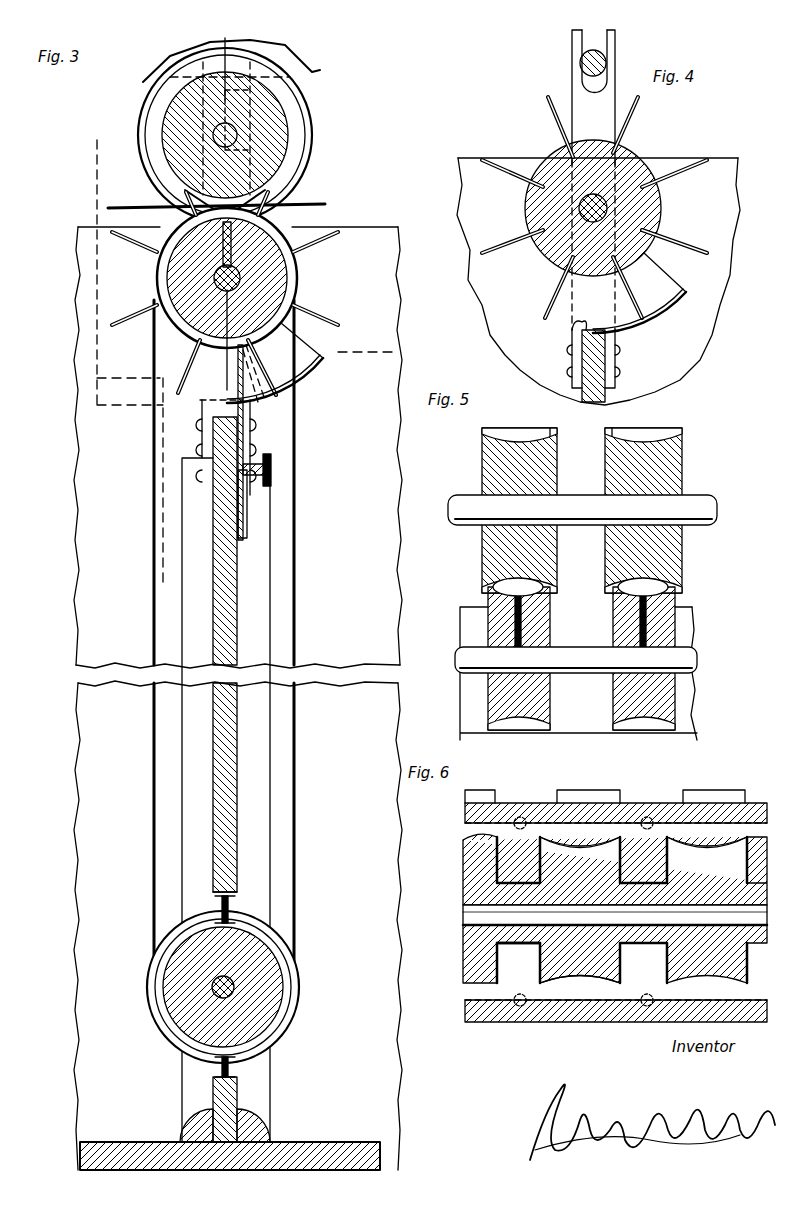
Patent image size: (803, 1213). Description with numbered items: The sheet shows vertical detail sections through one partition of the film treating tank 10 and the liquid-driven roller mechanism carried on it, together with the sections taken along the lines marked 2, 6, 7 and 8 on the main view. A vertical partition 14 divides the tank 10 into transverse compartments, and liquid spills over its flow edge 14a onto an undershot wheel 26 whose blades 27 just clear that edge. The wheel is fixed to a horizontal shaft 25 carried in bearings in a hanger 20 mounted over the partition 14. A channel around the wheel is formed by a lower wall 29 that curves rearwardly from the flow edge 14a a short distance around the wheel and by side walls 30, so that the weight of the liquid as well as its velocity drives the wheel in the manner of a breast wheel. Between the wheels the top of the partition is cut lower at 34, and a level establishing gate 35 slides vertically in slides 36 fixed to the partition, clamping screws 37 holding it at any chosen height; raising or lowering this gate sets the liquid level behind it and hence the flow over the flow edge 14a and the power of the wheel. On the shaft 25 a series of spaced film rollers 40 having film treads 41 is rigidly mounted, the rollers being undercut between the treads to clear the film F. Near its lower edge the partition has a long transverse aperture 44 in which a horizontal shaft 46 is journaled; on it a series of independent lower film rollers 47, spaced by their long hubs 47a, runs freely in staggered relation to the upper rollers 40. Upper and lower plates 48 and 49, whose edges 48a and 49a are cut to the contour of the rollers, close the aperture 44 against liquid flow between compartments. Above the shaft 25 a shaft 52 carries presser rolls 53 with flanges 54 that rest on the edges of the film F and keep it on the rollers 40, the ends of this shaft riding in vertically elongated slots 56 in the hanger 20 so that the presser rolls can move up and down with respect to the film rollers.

In FIG. 3, the tank 10 is at (356, 245).
In FIG. 4, the tank 10 is at (718, 232).
In FIG. 3, the vertical partition 14 is at (232, 786).
In FIG. 4, the vertical partition 14 is at (600, 370).
In FIG. 3, the flow edge 14a is at (200, 401).
In FIG. 4, the flow edge 14a is at (572, 325).
In FIG. 4, the hanger 20 is at (575, 96).
In FIG. 3, the horizontal shaft 25 is at (241, 278).
In FIG. 4, the horizontal shaft 25 is at (605, 188).
In FIG. 3, the undershot wheel 26 is at (338, 232).
In FIG. 4, the undershot wheel 26 is at (523, 205).
In FIG. 3, the blade 27 is at (138, 305).
In FIG. 4, the blade 27 is at (552, 115).
In FIG. 3, the lower wall 29 is at (275, 400).
In FIG. 4, the lower wall 29 is at (665, 312).
In FIG. 3, the side wall 30 is at (283, 362).
In FIG. 4, the side wall 30 is at (664, 275).
In FIG. 3, the lowered upper edge 34 is at (256, 426).
In FIG. 3, the level establishing gate 35 is at (244, 418).
In FIG. 3, the slide 36 is at (246, 505).
In FIG. 3, the clamping screw 37 is at (272, 470).
In FIG. 3, the film roller 40 is at (192, 336).
In FIG. 5, the film roller 40 is at (548, 636).
In FIG. 5, the film tread 41 is at (605, 582).
In FIG. 3, the transverse aperture 44 is at (218, 897).
In FIG. 6, the transverse aperture 44 is at (582, 830).
In FIG. 3, the horizontal shaft 46 is at (234, 990).
In FIG. 6, the horizontal shaft 46 is at (467, 913).
In FIG. 6, the lower film roller 47 is at (472, 870).
In FIG. 6, the hub 47a is at (526, 945).
In FIG. 3, the upper plate 48 is at (232, 900).
In FIG. 6, the upper plate 48 is at (472, 833).
In FIG. 6, the edge of upper plate 48a is at (575, 845).
In FIG. 3, the lower plate 49 is at (232, 1068).
In FIG. 6, the lower plate 49 is at (472, 995).
In FIG. 6, the edge of lower plate 49a is at (585, 985).
In FIG. 3, the shaft 52 is at (237, 138).
In FIG. 4, the shaft 52 is at (584, 60).
In FIG. 5, the shaft 52 is at (464, 503).
In FIG. 3, the presser roll 53 is at (168, 108).
In FIG. 5, the presser roll 53 is at (545, 476).
In FIG. 3, the flange 54 is at (140, 130).
In FIG. 5, the flange 54 is at (560, 430).
In FIG. 3, the vertically elongated slot 56 is at (250, 100).
In FIG. 4, the vertically elongated slot 56 is at (610, 40).
In FIG. 3, the film F is at (296, 605).
In FIG. 5, the film F is at (494, 578).
In FIG. 3, the section line 2- 2 is at (350, 350).
In FIG. 3, the section line 6- 6 is at (242, 873).
In FIG. 3, the section line 7- 7 is at (112, 140).
In FIG. 3, the section line 8- 8 is at (165, 653).